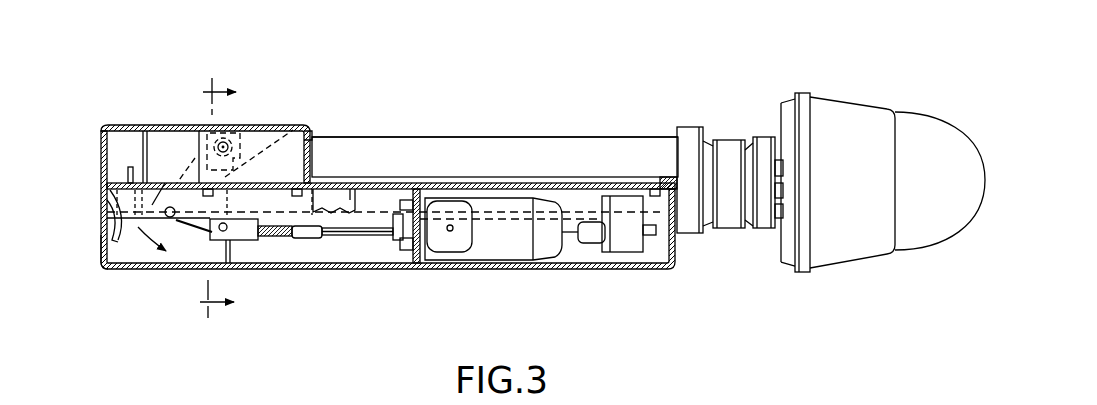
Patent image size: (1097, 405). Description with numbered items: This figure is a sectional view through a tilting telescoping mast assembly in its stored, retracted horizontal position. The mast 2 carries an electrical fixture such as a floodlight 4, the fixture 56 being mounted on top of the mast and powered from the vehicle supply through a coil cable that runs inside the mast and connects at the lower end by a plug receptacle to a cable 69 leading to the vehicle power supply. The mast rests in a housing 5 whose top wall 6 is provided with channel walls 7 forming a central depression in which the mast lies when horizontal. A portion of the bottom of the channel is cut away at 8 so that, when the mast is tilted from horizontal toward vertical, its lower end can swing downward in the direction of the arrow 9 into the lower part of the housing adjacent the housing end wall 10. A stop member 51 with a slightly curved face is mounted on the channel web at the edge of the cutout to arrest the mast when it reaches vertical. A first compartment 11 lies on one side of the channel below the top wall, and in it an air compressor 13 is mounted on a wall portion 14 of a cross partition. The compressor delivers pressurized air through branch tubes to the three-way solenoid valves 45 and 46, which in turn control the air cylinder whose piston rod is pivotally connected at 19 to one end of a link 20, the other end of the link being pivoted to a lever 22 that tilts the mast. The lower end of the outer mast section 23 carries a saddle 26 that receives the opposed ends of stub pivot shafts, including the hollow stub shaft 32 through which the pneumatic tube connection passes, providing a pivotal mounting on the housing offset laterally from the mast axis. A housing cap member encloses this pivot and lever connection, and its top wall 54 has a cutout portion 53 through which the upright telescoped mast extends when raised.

The mast 2 is at (424, 133).
The floodlight 4 is at (920, 128).
The housing 5 is at (360, 274).
The top wall 6 is at (522, 187).
The channel walls 7 is at (428, 162).
The cutaway portion 8 is at (282, 238).
The arrow 9 is at (147, 255).
The housing end wall 10 is at (102, 247).
The first compartment 11 is at (588, 260).
The air compressor 13 is at (513, 248).
The wall portion 14 is at (420, 248).
The pivotal connection 19 is at (227, 219).
The link 20 is at (200, 223).
The lever 22 is at (195, 158).
The outer mast section 23 is at (615, 150).
The saddle 26 is at (252, 158).
The stub pivot shaft 32 is at (292, 128).
The 3-way solenoid valve 45 is at (338, 191).
The 3-way solenoid valve 46 is at (636, 250).
The stop member 51 is at (317, 238).
The cutout portion 53 is at (236, 150).
The top wall of housing cap member 54 is at (123, 125).
The floodlight or electrical fixture 56 is at (833, 272).
The cable 69 is at (107, 217).